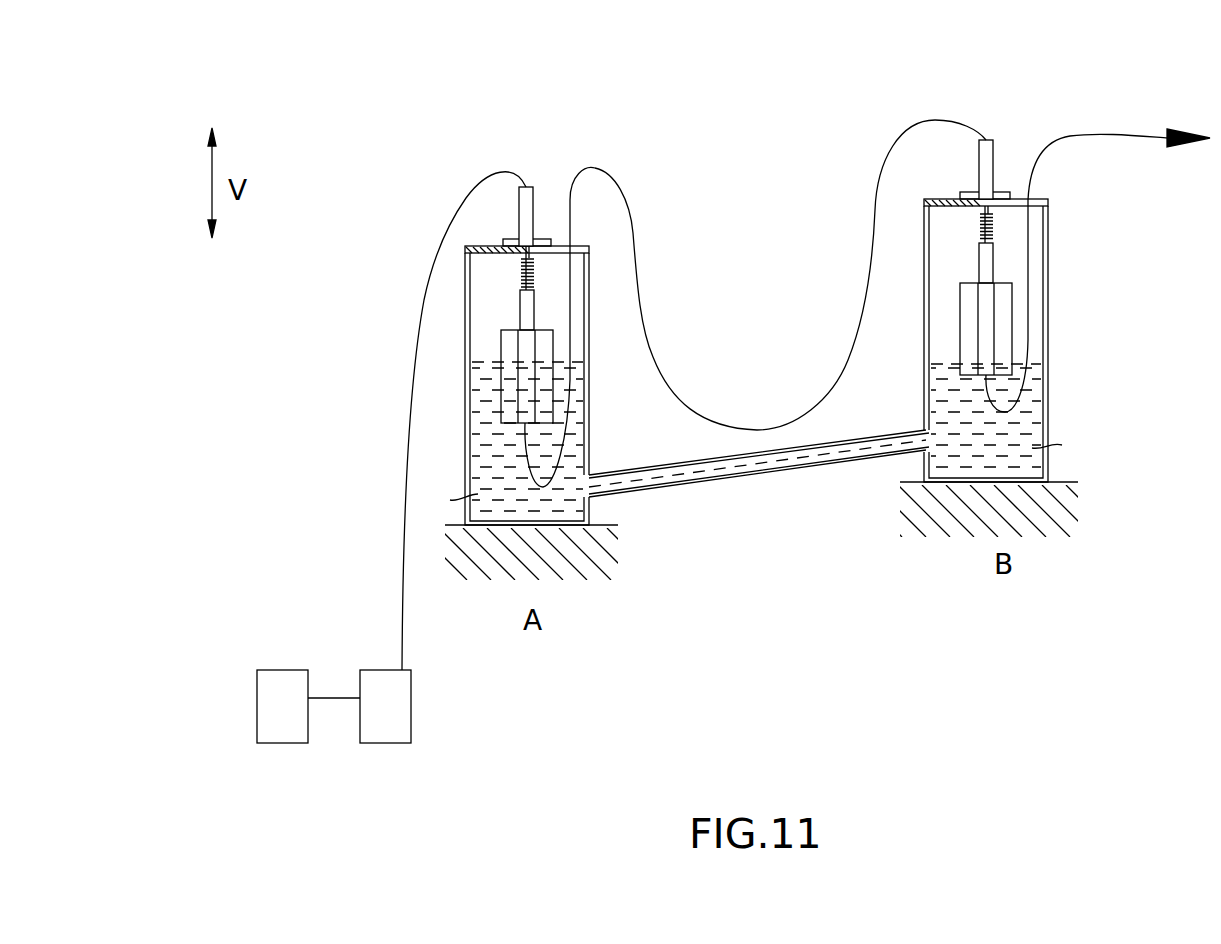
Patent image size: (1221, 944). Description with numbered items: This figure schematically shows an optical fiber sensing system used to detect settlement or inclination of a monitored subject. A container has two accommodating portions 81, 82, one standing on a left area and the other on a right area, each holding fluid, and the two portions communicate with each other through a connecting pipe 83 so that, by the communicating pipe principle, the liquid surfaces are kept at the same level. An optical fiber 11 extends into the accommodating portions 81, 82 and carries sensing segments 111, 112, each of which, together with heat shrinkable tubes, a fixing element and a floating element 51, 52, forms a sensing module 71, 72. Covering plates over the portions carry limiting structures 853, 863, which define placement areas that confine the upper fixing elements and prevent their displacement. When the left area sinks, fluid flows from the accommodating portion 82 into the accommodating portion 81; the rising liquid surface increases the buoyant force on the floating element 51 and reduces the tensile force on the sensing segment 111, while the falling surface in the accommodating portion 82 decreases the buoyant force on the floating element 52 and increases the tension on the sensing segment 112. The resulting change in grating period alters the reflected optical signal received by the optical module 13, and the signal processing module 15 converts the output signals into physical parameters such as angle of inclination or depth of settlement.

The sensing module 71 is at (458, 142).
The sensing module 72 is at (1046, 111).
The accommodating portion 81 is at (466, 370).
The accommodating portion 82 is at (1048, 290).
The floating element 51 is at (497, 395).
The floating element 52 is at (963, 330).
The sensing segment 111 is at (522, 270).
The sensing segment 112 is at (981, 226).
The limiting structure 853 is at (510, 239).
The limiting structure 863 is at (968, 192).
The optical fiber 11 is at (763, 428).
The connecting pipe 83 is at (718, 478).
The optical module 13 is at (385, 735).
The signal processing module 15 is at (278, 735).